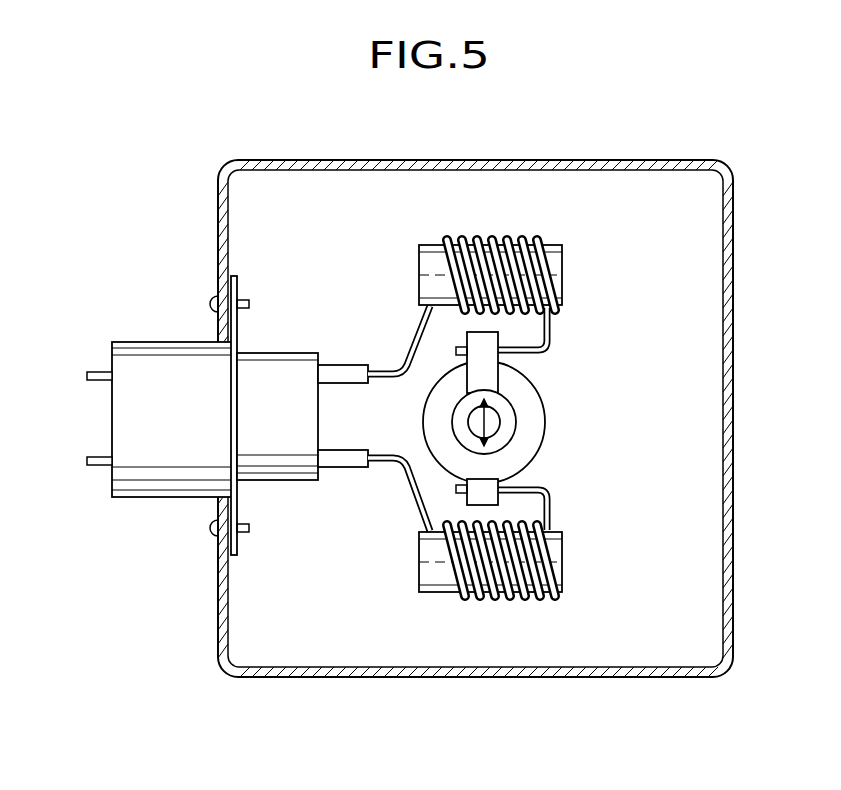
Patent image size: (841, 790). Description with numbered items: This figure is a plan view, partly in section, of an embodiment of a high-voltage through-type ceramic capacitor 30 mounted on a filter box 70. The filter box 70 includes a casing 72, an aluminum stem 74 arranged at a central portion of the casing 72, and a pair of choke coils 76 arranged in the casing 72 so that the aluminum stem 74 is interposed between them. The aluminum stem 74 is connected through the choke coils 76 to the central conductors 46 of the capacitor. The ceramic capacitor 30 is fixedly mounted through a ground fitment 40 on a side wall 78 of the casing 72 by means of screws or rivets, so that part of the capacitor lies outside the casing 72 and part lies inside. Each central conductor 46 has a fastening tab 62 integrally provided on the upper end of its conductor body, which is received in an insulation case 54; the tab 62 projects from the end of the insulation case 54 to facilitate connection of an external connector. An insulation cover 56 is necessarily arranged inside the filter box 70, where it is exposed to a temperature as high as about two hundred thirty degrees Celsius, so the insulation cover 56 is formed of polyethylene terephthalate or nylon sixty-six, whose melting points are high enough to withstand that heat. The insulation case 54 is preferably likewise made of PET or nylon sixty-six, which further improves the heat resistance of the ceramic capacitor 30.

The high-voltage through-type ceramic capacitor 30 is at (160, 505).
The ground fitment 40 is at (229, 376).
The central conductor 46 is at (338, 374).
The insulation case 54 is at (133, 356).
The insulation cover 56 is at (285, 474).
The fastening tab 62 is at (90, 368).
The filter box 70 is at (735, 445).
The casing 72 is at (545, 678).
The aluminum stem 74 is at (533, 410).
The choke coil 76 is at (552, 273).
The side wall 78 is at (222, 591).